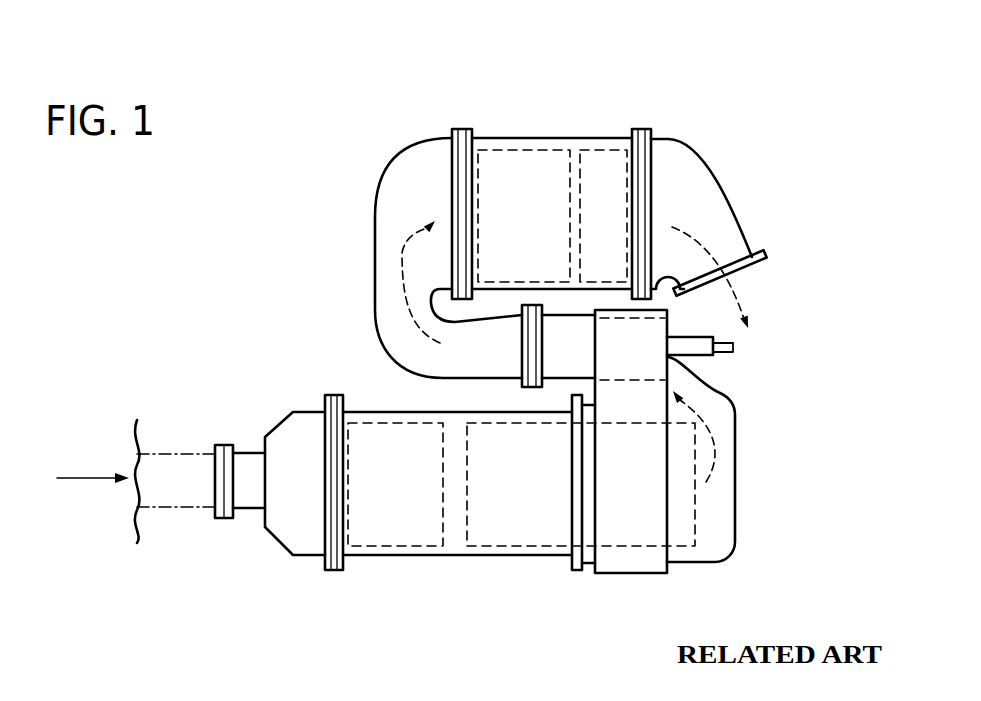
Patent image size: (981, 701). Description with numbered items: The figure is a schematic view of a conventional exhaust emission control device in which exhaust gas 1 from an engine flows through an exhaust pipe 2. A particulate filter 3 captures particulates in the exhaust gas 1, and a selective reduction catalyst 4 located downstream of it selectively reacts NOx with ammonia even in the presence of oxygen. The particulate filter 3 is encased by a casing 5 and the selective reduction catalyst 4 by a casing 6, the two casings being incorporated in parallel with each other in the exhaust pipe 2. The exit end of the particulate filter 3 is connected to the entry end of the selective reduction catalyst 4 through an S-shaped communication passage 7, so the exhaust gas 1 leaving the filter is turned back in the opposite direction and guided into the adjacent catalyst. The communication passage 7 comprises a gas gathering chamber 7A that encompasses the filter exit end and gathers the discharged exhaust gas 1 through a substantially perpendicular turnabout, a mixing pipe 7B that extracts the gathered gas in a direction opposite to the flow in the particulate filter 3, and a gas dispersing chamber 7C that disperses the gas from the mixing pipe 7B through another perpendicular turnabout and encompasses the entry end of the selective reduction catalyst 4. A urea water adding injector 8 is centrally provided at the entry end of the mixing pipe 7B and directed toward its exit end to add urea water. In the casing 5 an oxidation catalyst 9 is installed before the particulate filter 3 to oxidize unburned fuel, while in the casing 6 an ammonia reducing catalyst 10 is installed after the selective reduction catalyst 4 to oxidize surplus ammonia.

The exhaust gas 1 is at (87, 477).
The exhaust pipe 2 is at (170, 450).
The particulate filter 3 is at (498, 528).
The selective reduction catalyst 4 is at (507, 160).
The casing 5 is at (427, 557).
The casing 6 is at (553, 138).
The communication passage 7 is at (551, 395).
The gas gathering chamber 7A is at (735, 483).
The mixing pipe 7B is at (558, 368).
The gas dispersing chamber 7C is at (377, 178).
The urea water adding injector 8 is at (727, 357).
The oxidation catalyst 9 is at (372, 527).
The ammonia reducing catalyst 10 is at (602, 160).